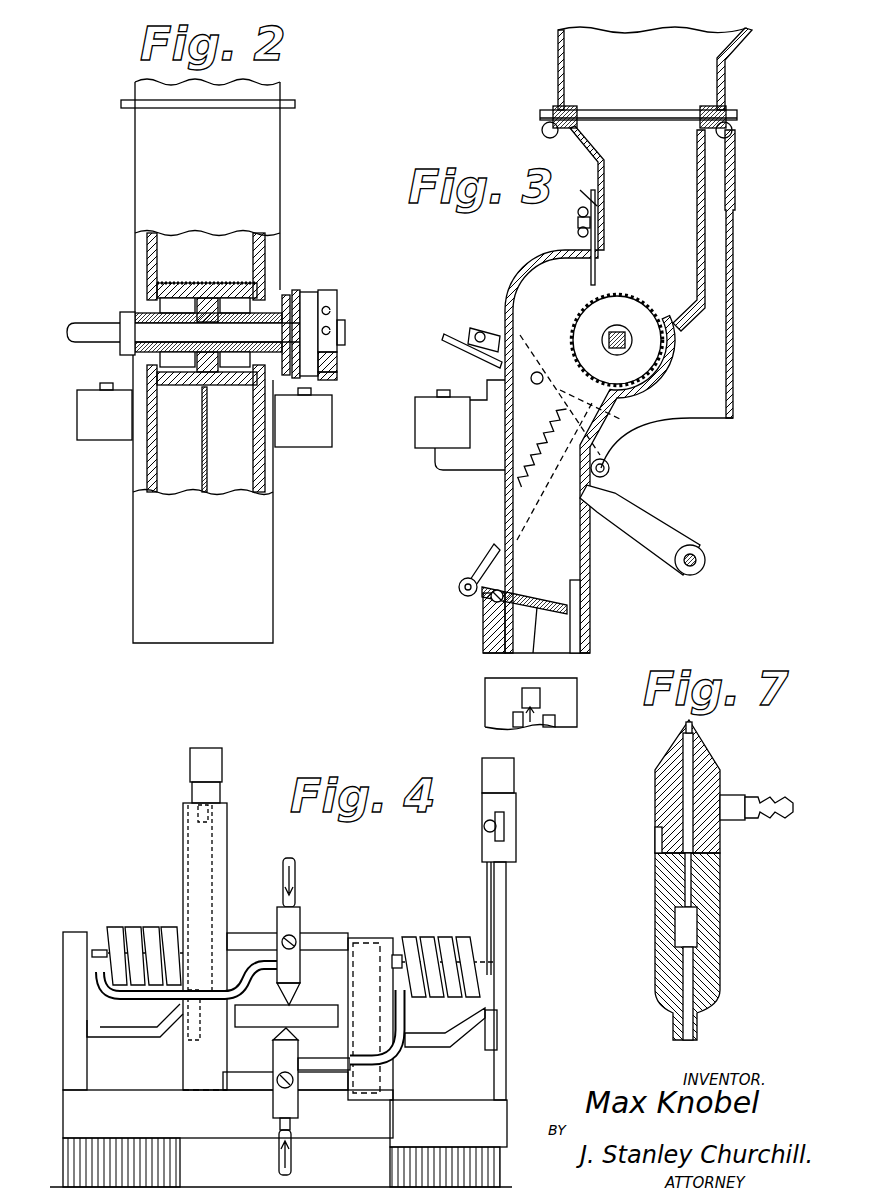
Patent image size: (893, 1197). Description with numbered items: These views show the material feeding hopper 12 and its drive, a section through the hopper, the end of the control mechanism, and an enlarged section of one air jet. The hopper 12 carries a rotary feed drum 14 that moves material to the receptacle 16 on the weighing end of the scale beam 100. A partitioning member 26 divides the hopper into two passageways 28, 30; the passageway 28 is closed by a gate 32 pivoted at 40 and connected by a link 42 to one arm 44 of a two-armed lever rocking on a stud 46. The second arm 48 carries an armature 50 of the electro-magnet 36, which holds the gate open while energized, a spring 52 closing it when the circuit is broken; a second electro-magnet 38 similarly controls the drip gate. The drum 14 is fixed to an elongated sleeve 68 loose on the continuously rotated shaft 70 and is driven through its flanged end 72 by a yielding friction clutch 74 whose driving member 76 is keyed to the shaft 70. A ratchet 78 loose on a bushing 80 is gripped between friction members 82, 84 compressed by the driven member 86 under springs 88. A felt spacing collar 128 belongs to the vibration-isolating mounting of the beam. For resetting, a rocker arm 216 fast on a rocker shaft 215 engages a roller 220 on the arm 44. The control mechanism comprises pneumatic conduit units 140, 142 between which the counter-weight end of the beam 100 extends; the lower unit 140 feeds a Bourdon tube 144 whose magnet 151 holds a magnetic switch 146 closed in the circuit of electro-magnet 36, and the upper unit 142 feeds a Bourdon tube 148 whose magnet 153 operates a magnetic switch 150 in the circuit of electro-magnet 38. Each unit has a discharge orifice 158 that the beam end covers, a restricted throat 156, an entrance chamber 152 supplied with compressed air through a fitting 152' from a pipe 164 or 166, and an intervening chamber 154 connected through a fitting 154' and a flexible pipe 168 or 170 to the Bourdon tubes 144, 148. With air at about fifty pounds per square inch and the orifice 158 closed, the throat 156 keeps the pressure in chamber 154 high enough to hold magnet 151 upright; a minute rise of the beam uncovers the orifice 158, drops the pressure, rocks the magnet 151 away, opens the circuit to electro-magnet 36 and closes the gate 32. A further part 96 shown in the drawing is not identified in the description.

In FIG. 2, the material feeding hopper 12 is at (112, 283).
In FIG. 3, the material feeding hopper 12 is at (505, 272).
In FIG. 2, the rotary feed drum 14 is at (195, 283).
In FIG. 3, the rotary feed drum 14 is at (648, 300).
In FIG. 3, the receptacle 16 is at (500, 702).
In FIG. 2, the partitioning member 26 is at (202, 468).
In FIG. 2, the passageway 28 is at (185, 439).
In FIG. 3, the passageway 28 is at (533, 565).
In FIG. 2, the passageway 30 is at (231, 416).
In FIG. 3, the gate 32 is at (533, 653).
In FIG. 2, the electro-magnet 36 is at (104, 411).
In FIG. 3, the electro-magnet 36 is at (460, 425).
In FIG. 2, the electro-magnet 38 is at (303, 417).
In FIG. 3, the pivot 40 is at (466, 598).
In FIG. 3, the link 42 is at (488, 560).
In FIG. 3, the arm of two-armed lever 44 is at (622, 420).
In FIG. 3, the stud 46 is at (538, 372).
In FIG. 3, the second arm of two-armed lever 48 is at (485, 330).
In FIG. 3, the armature 50 is at (470, 360).
In FIG. 3, the spring 52 is at (538, 455).
In FIG. 2, the elongated sleeve 68 is at (135, 352).
In FIG. 2, the continuously rotated shaft 70 is at (87, 323).
In FIG. 2, the flanged end 72 is at (284, 298).
In FIG. 2, the friction clutch 74 is at (346, 280).
In FIG. 2, the driving member 76 is at (338, 302).
In FIG. 2, the ratchet 78 is at (297, 300).
In FIG. 2, the bushing 80 is at (345, 337).
In FIG. 2, the friction member 82 is at (258, 422).
In FIG. 2, the friction member 84 is at (322, 378).
In FIG. 2, the driven member 86 is at (320, 318).
In FIG. 2, the springs 88 is at (338, 366).
In FIG. 3, the pin 96 is at (597, 280).
In FIG. 4, the scale beam 100 is at (286, 1016).
In FIG. 4, the felt spacing collar 128 is at (182, 1166).
In FIG. 4, the lower pneumatic control unit 140 is at (273, 1055).
In FIG. 4, the upper pneumatic control unit 142 is at (301, 975).
In FIG. 4, the Bourdon tube 144 is at (445, 937).
In FIG. 4, the magnetic switch 146 is at (518, 820).
In FIG. 4, the Bourdon tube 148 is at (140, 927).
In FIG. 4, the magnetic switch 150 is at (185, 790).
In FIG. 4, the magnet 151 is at (506, 841).
In FIG. 7, the chamber 152 is at (726, 927).
In FIG. 7, the fitting 152' is at (649, 993).
In FIG. 4, the magnet 153 is at (208, 832).
In FIG. 7, the intervening chamber 154 is at (661, 786).
In FIG. 7, the fitting 154' is at (757, 787).
In FIG. 7, the restricted throat 156 is at (688, 878).
In FIG. 7, the discharge orifice 158 is at (688, 721).
In FIG. 4, the pipe 164 is at (293, 1162).
In FIG. 4, the pipe 166 is at (298, 884).
In FIG. 4, the flexible pipe 168 is at (402, 1052).
In FIG. 4, the flexible pipe 170 is at (140, 998).
In FIG. 3, the rocker shaft 215 is at (706, 560).
In FIG. 3, the rocker arm 216 is at (645, 535).
In FIG. 3, the roller 220 is at (612, 468).